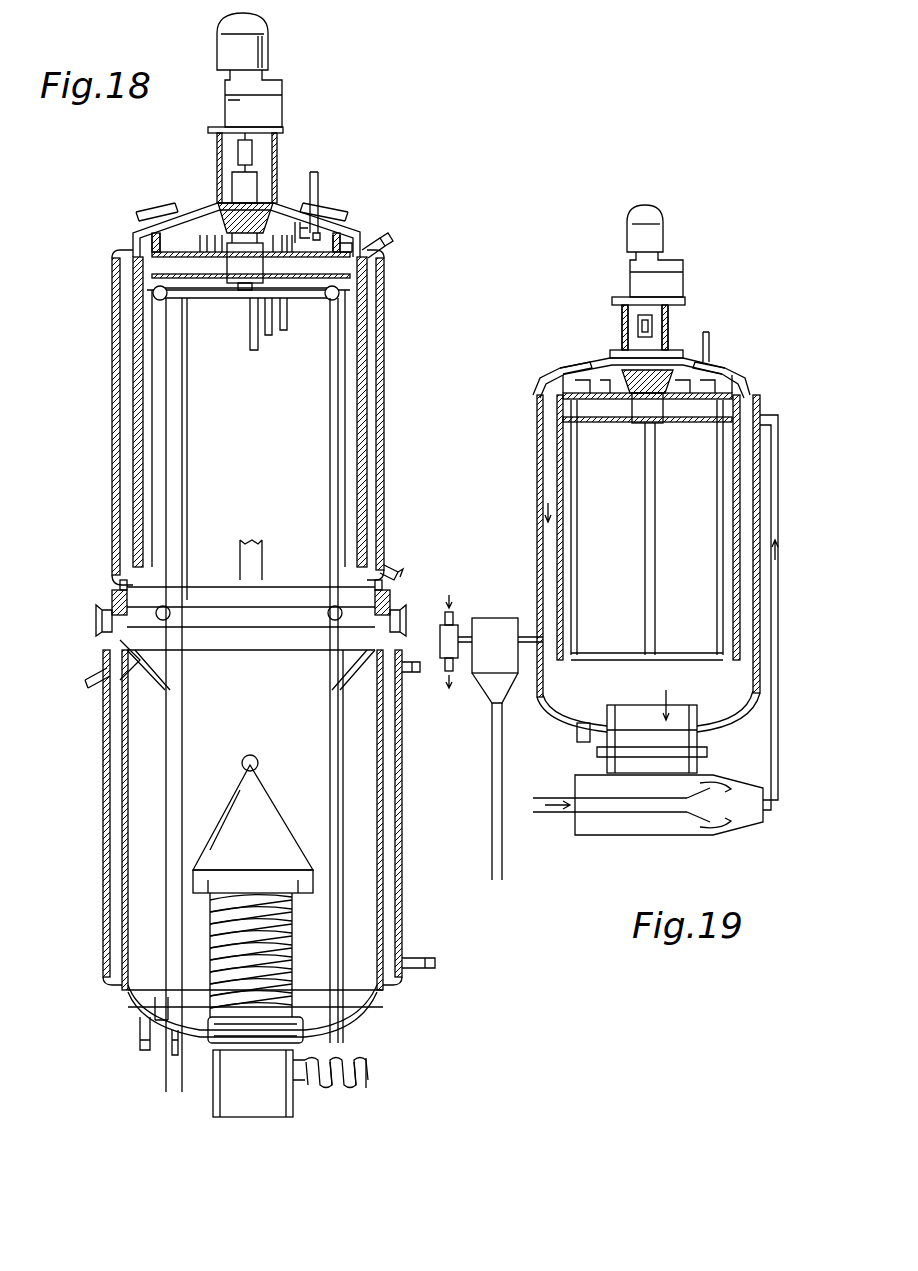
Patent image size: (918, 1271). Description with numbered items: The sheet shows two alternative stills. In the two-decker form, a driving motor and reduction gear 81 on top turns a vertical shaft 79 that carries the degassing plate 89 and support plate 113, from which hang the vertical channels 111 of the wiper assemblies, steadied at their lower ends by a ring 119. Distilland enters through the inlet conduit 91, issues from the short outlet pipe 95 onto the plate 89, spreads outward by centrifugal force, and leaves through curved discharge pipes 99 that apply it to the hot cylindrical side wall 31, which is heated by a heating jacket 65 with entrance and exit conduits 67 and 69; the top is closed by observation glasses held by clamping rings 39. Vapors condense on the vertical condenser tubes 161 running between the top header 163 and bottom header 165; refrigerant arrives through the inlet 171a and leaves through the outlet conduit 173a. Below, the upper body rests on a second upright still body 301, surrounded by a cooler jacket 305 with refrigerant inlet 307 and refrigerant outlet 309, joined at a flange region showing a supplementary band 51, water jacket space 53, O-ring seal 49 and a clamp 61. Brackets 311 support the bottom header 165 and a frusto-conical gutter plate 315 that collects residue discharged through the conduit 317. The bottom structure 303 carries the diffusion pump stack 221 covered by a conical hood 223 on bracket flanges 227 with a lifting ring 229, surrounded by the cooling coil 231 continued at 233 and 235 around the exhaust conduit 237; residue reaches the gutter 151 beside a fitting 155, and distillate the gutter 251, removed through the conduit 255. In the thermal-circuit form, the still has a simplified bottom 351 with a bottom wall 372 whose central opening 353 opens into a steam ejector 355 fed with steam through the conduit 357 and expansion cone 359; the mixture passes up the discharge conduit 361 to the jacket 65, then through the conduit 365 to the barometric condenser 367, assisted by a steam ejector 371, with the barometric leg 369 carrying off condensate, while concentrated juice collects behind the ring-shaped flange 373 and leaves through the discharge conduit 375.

In FIG. 18, the driving motor and reduction gear 81 is at (275, 47).
In FIG. 19, the driving motor and reduction gear 81 is at (667, 238).
In FIG. 18, the vertical shaft 79 is at (232, 176).
In FIG. 18, the distilland inlet conduit 91 is at (320, 180).
In FIG. 19, the distilland inlet conduit 91 is at (710, 338).
In FIG. 18, the clamping rings 39 is at (130, 206).
In FIG. 18, the outlet pipe 95 is at (297, 225).
In FIG. 18, the discharge pipes 99 is at (352, 246).
In FIG. 18, the exit conduit 69 is at (390, 252).
In FIG. 18, the support plate 113 is at (202, 275).
In FIG. 19, the support plate 113 is at (620, 423).
In FIG. 18, the degassing plate 89 is at (310, 265).
In FIG. 19, the degassing plate 89 is at (700, 420).
In FIG. 18, the top header 163 is at (217, 298).
In FIG. 18, the condenser tubes 161 is at (255, 350).
In FIG. 18, the cylindrical side wall 31 is at (367, 385).
In FIG. 19, the cylindrical side wall 31 is at (563, 462).
In FIG. 18, the heating jacket 65 is at (385, 415).
In FIG. 19, the heating jacket 65 is at (745, 388).
In FIG. 18, the outlet conduit 173a is at (187, 445).
In FIG. 18, the vertical channels 111 is at (147, 480).
In FIG. 19, the vertical channels 111 is at (720, 510).
In FIG. 18, the entrance conduit 67 is at (398, 568).
In FIG. 18, the bottom header 165 is at (200, 620).
In FIG. 18, the ring 119 is at (305, 595).
In FIG. 18, the water jacket space 53 is at (118, 600).
In FIG. 18, the supplementary band 51 is at (386, 600).
In FIG. 18, the clamp 61 is at (100, 622).
In FIG. 18, the O-ring seal 49 is at (400, 628).
In FIG. 18, the conduit 317 is at (88, 685).
In FIG. 18, the frusto-conical gutter plate 315 is at (145, 655).
In FIG. 18, the brackets 311 is at (125, 660).
In FIG. 18, the refrigerant outlet 309 is at (414, 674).
In FIG. 18, the lifting ring 229 is at (244, 758).
In FIG. 18, the inlet 171a is at (338, 740).
In FIG. 18, the second upright still body 301 is at (125, 800).
In FIG. 18, the conical hood 223 is at (270, 813).
In FIG. 18, the cooling coil 231 is at (262, 893).
In FIG. 18, the bracket flanges 227 is at (313, 880).
In FIG. 18, the jacket 305 is at (383, 860).
In FIG. 18, the refrigerant inlet 307 is at (408, 955).
In FIG. 18, the gutter 251 is at (163, 997).
In FIG. 18, the gutter 151 is at (365, 995).
In FIG. 18, the bottom structure 303 is at (375, 1010).
In FIG. 18, the drain fitting 155 is at (140, 1032).
In FIG. 18, the conduit 255 is at (172, 1055).
In FIG. 18, the cooling coil continuation 233 is at (260, 1052).
In FIG. 18, the exhaust conduit 237 is at (368, 1075).
In FIG. 18, the cooling coil continuation 235 is at (335, 1090).
In FIG. 18, the diffusion pump stack 221 is at (225, 1108).
In FIG. 19, the barometric condenser 367 is at (503, 618).
In FIG. 19, the steam ejector 371 is at (450, 628).
In FIG. 19, the conduit 365 is at (528, 645).
In FIG. 19, the ring-shaped flange 373 is at (605, 710).
In FIG. 19, the central opening 353 is at (665, 715).
In FIG. 19, the bottom wall 372 is at (565, 713).
In FIG. 19, the bottom 351 is at (720, 712).
In FIG. 19, the discharge conduit 375 is at (580, 742).
In FIG. 19, the discharge conduit 361 is at (770, 750).
In FIG. 19, the barometric leg 369 is at (492, 752).
In FIG. 19, the conduit 357 is at (555, 812).
In FIG. 19, the expansion cone 359 is at (690, 820).
In FIG. 19, the steam ejector 355 is at (600, 835).